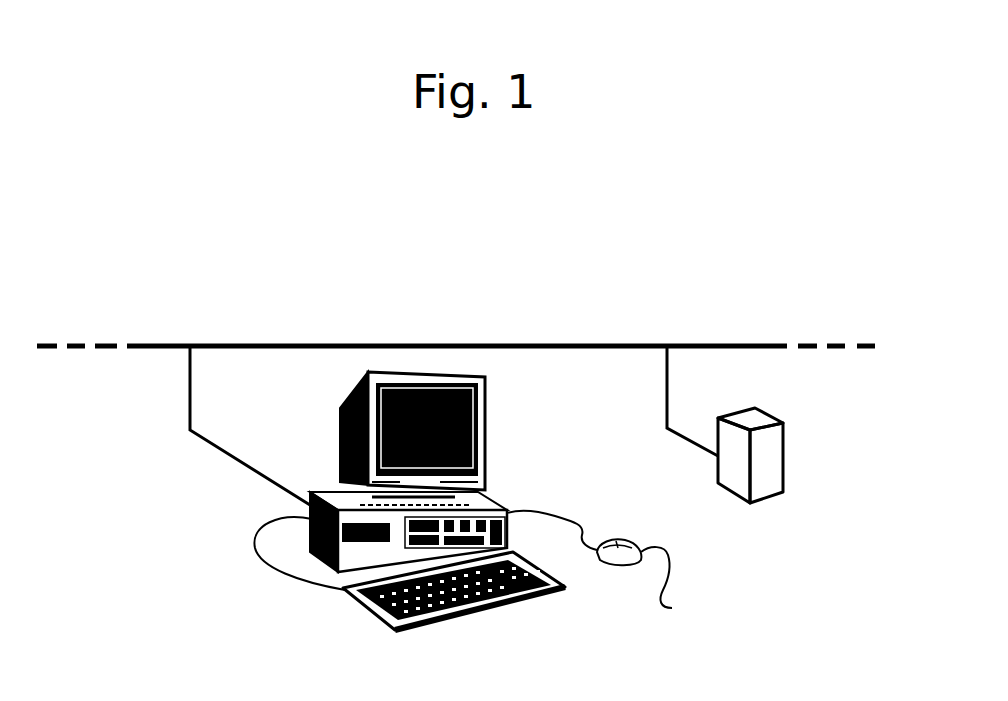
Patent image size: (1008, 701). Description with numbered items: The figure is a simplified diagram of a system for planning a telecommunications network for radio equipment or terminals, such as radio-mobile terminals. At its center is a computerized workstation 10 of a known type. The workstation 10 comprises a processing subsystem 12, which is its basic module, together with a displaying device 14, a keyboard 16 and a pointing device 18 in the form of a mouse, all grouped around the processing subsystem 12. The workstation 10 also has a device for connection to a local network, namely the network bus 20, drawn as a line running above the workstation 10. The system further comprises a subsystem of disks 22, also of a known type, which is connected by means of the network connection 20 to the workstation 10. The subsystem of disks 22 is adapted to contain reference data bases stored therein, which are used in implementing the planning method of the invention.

The computerized workstation 10 is at (425, 529).
The processing subsystem 12 is at (332, 500).
The displaying device 14 is at (485, 437).
The keyboard 16 is at (507, 603).
The pointing device 18 is at (659, 584).
The network bus 20 is at (276, 346).
The subsystem of disks 22 is at (760, 472).